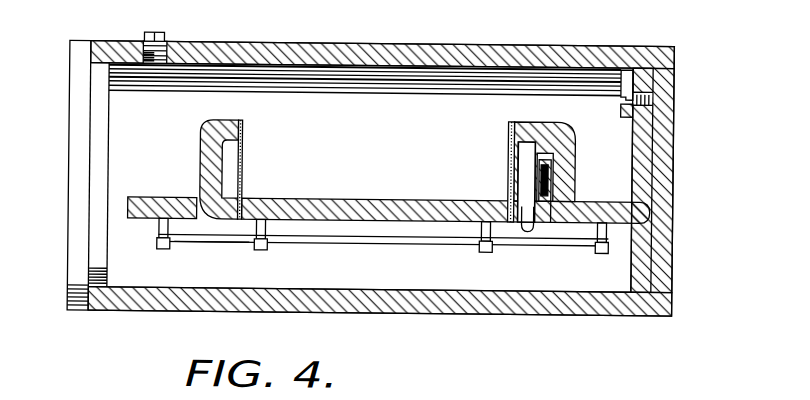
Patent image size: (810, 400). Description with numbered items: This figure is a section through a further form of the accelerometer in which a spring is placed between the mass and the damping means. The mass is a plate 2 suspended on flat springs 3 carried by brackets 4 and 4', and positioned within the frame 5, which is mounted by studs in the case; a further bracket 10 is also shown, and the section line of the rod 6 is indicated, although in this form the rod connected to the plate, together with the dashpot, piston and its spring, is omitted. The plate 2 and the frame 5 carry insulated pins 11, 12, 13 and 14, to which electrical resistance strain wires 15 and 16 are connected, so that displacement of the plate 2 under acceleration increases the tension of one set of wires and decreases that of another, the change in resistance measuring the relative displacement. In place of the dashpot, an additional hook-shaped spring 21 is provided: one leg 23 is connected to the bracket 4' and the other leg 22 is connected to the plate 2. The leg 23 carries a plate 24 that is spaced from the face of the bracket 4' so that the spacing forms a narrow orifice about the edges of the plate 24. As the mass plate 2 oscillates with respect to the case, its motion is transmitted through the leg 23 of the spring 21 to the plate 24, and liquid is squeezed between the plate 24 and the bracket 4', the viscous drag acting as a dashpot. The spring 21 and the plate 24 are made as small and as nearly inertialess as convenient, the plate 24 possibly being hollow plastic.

The plate 2 is at (347, 200).
The flat spring 3 is at (243, 151).
The bracket 4 is at (194, 169).
The bracket 4' is at (561, 162).
The frame 5 is at (552, 44).
The rod 6 is at (58, 218).
The bracket 10 is at (643, 120).
The insulated pin 11 is at (163, 252).
The insulated pin 12 is at (598, 251).
The insulated pin 13 is at (260, 252).
The insulated pin 14 is at (483, 252).
The electrical resistance strain wire 15 is at (217, 246).
The electrical resistance strain wire 16 is at (410, 246).
The hook-shaped spring 21 is at (525, 153).
The leg 22 is at (520, 227).
The leg 23 is at (551, 221).
The plate 24 is at (548, 168).